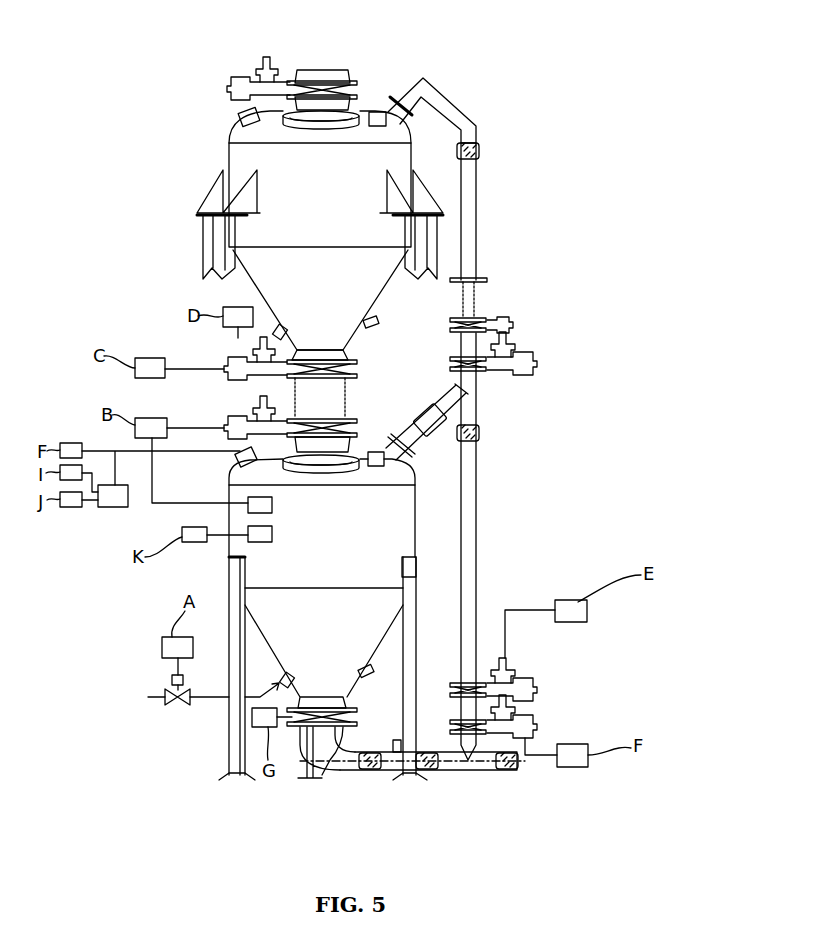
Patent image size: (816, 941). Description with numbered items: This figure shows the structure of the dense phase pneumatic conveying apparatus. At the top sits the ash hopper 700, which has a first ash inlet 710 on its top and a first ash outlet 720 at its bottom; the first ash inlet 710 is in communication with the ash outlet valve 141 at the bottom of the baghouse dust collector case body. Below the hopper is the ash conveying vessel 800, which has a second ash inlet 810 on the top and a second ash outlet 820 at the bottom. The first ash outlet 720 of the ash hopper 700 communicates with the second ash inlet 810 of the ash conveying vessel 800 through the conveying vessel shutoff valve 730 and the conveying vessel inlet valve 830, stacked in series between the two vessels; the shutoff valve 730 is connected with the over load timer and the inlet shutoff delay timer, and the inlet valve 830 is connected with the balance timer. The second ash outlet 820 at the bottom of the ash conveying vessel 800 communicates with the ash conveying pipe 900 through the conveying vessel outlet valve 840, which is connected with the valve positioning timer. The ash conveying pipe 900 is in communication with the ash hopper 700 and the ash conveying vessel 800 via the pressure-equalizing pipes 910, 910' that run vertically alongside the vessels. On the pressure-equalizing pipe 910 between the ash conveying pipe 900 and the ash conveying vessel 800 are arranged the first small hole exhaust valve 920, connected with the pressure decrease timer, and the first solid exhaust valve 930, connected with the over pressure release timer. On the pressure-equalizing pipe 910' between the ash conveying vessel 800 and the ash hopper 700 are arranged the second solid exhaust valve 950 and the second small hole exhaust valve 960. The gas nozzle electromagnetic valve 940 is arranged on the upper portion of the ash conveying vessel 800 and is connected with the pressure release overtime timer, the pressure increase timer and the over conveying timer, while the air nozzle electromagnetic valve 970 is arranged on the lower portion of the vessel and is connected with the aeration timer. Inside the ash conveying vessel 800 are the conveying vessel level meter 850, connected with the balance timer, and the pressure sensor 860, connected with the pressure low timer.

The ash outlet valve 141 is at (268, 68).
The first ash inlet 710 is at (353, 110).
The ash hopper 700 is at (407, 153).
The pressure-equalizing pipe 910' is at (480, 179).
The first ash outlet 720 is at (374, 320).
The second small hole exhaust valve 960 is at (499, 313).
The second solid exhaust valve 950 is at (530, 372).
The conveying vessel shutoff valve 730 is at (226, 362).
The conveying vessel inlet valve 830 is at (226, 421).
The second ash inlet 810 is at (410, 465).
The pressure-equalizing pipe 910 is at (524, 546).
The ash conveying vessel 800 is at (383, 533).
The conveying vessel level meter 850 is at (253, 552).
The pressure sensor 860 is at (272, 536).
The gas nozzle electromagnetic valve 940 is at (115, 507).
The air nozzle electromagnetic valve 970 is at (172, 680).
The first solid exhaust valve 930 is at (527, 682).
The first small hole exhaust valve 920 is at (530, 717).
The ash conveying pipe 900 is at (517, 770).
The second ash outlet 820 is at (306, 735).
The conveying vessel outlet valve 840 is at (337, 755).